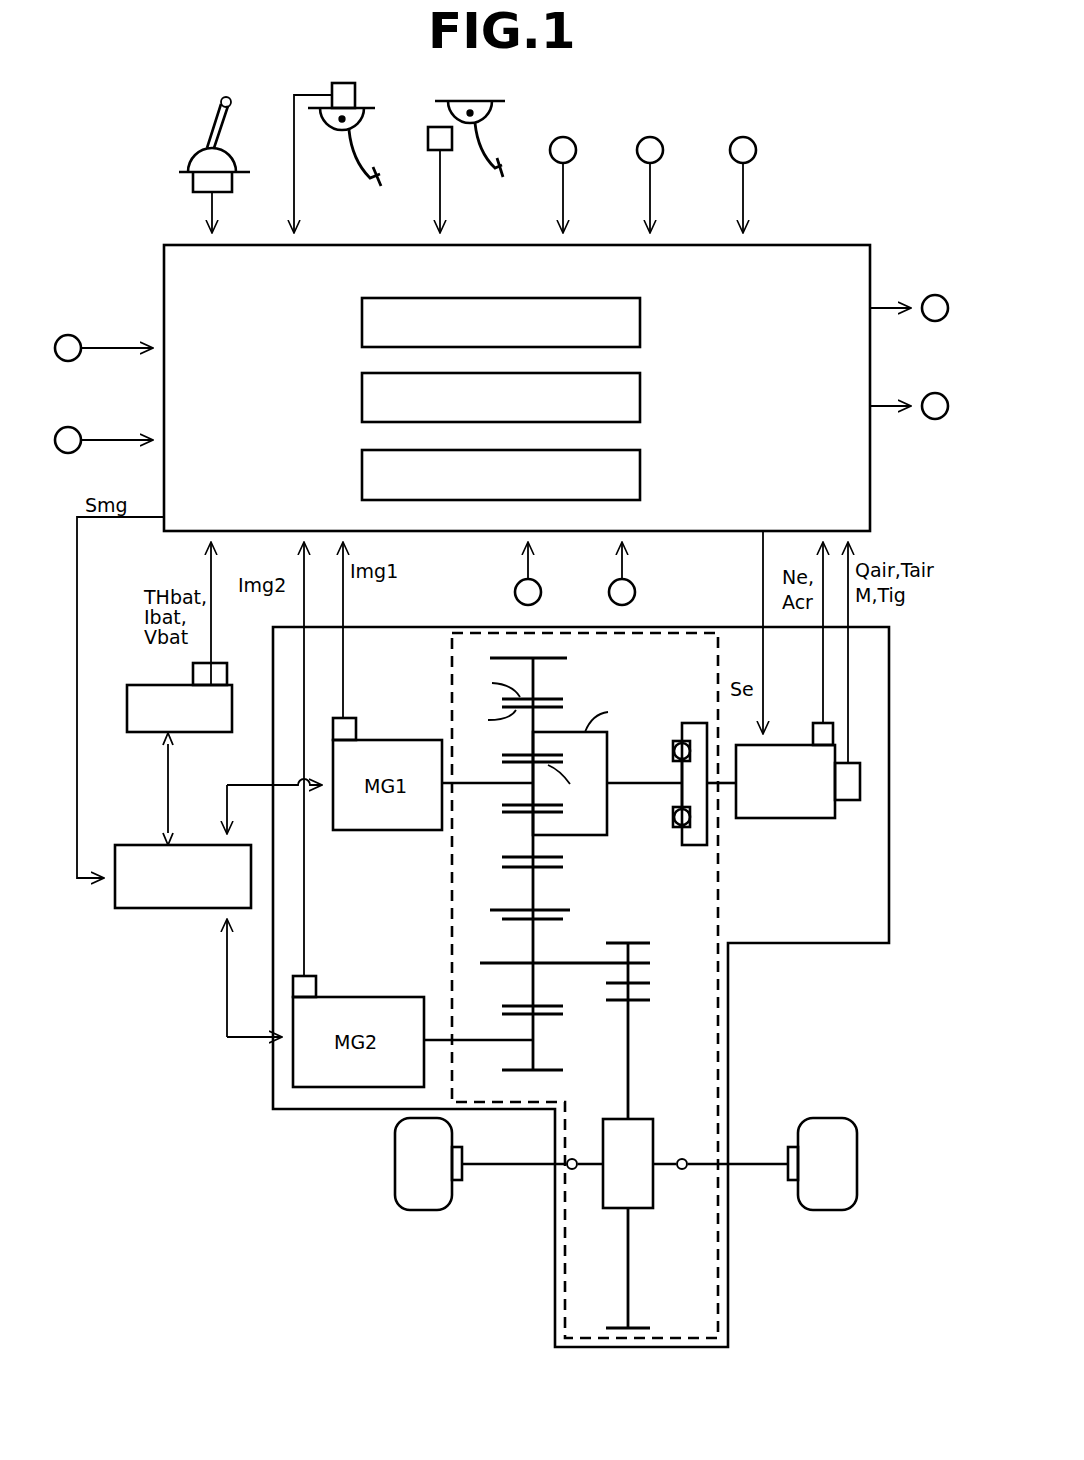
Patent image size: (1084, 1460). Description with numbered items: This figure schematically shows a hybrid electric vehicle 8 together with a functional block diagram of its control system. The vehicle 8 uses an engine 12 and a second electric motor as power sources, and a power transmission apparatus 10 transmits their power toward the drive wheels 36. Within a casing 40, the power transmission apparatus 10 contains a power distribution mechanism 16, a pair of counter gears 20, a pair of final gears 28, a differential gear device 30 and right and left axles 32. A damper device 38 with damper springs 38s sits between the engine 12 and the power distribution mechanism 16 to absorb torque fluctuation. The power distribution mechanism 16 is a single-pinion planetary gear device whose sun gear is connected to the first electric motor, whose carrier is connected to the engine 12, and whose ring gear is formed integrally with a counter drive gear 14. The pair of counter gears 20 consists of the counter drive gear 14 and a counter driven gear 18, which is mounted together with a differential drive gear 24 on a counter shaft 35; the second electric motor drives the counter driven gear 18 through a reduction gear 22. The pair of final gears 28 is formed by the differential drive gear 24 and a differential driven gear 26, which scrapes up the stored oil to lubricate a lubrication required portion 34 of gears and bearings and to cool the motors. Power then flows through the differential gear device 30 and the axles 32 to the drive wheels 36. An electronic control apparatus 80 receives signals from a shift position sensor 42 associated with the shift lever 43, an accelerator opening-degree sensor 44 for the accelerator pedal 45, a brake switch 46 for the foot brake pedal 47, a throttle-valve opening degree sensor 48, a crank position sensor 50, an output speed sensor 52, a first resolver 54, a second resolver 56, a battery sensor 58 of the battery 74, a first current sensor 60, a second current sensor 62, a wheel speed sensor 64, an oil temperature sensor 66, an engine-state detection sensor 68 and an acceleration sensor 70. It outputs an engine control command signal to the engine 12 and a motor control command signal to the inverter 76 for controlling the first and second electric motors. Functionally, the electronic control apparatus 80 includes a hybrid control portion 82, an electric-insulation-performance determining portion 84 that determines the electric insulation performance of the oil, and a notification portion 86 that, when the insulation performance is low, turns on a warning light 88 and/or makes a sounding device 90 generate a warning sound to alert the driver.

The hybrid electric vehicle 8 is at (838, 106).
The power transmission apparatus 10 is at (300, 1210).
The engine 12 is at (783, 818).
The counter drive gear 14 is at (550, 657).
The power distribution mechanism 16 is at (562, 850).
The counter driven gear 18 is at (514, 1005).
The pair of counter gears 20 is at (570, 988).
The reduction gear 22 is at (514, 1070).
The differential drive gear 24 is at (640, 943).
The differential driven gear 26 is at (640, 1330).
The pair of final gears 28 is at (672, 1010).
The differential gear device 30 is at (664, 1216).
The right and left axles 32 is at (497, 1168).
The lubrication required portion 34 is at (700, 1062).
The counter shaft 35 is at (514, 962).
The drive wheels 36 is at (402, 1138).
The damper device 38 is at (710, 850).
The damper springs 38s is at (672, 748).
The casing 40 is at (368, 627).
The shift position sensor 42 is at (195, 181).
The shift lever 43 is at (212, 128).
The accelerator opening-degree sensor 44 is at (355, 97).
The accelerator pedal 45 is at (382, 186).
The brake switch 46 is at (452, 145).
The foot brake pedal 47 is at (504, 177).
The throttle-valve opening degree sensor 48 is at (560, 140).
The crank position sensor 50 is at (815, 735).
The output speed sensor 52 is at (648, 140).
The first resolver 54 is at (66, 337).
The second resolver 56 is at (66, 429).
The battery sensor 58 is at (195, 676).
The first current sensor 60 is at (346, 729).
The second current sensor 62 is at (306, 986).
The wheel speed sensor 64 is at (535, 590).
The oil temperature sensor 66 is at (629, 590).
The engine-state detection sensor 68 is at (852, 800).
The acceleration sensor 70 is at (740, 140).
The battery 74 is at (198, 726).
The inverter 76 is at (158, 902).
The electronic control apparatus 80 is at (828, 258).
The hybrid control portion 82 is at (628, 324).
The electric-insulation-performance determining portion 84 is at (630, 406).
The notification portion 86 is at (622, 478).
The warning light 88 is at (934, 298).
The sounding device 90 is at (934, 396).